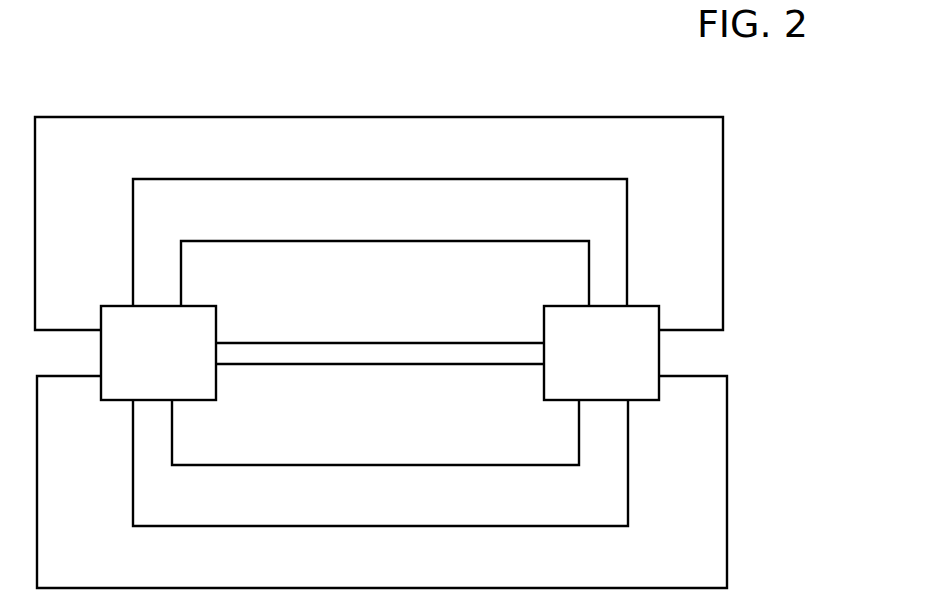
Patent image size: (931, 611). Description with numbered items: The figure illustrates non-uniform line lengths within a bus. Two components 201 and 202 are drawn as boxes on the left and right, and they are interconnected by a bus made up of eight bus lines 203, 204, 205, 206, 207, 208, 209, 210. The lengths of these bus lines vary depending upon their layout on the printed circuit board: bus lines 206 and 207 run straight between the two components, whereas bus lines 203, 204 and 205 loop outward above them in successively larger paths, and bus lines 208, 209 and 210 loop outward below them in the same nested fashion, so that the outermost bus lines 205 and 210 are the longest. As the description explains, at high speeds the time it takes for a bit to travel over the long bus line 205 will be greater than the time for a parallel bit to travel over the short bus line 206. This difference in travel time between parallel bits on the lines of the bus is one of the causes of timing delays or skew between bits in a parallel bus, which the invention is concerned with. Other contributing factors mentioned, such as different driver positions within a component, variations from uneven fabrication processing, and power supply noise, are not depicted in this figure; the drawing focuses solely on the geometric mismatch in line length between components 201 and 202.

The component 201 is at (217, 313).
The component 202 is at (662, 315).
The bus line 203 is at (530, 238).
The bus line 204 is at (530, 176).
The bus line 205 is at (525, 117).
The bus line 206 is at (388, 342).
The bus line 207 is at (398, 366).
The bus line 208 is at (526, 464).
The bus line 209 is at (526, 524).
The bus line 210 is at (526, 587).